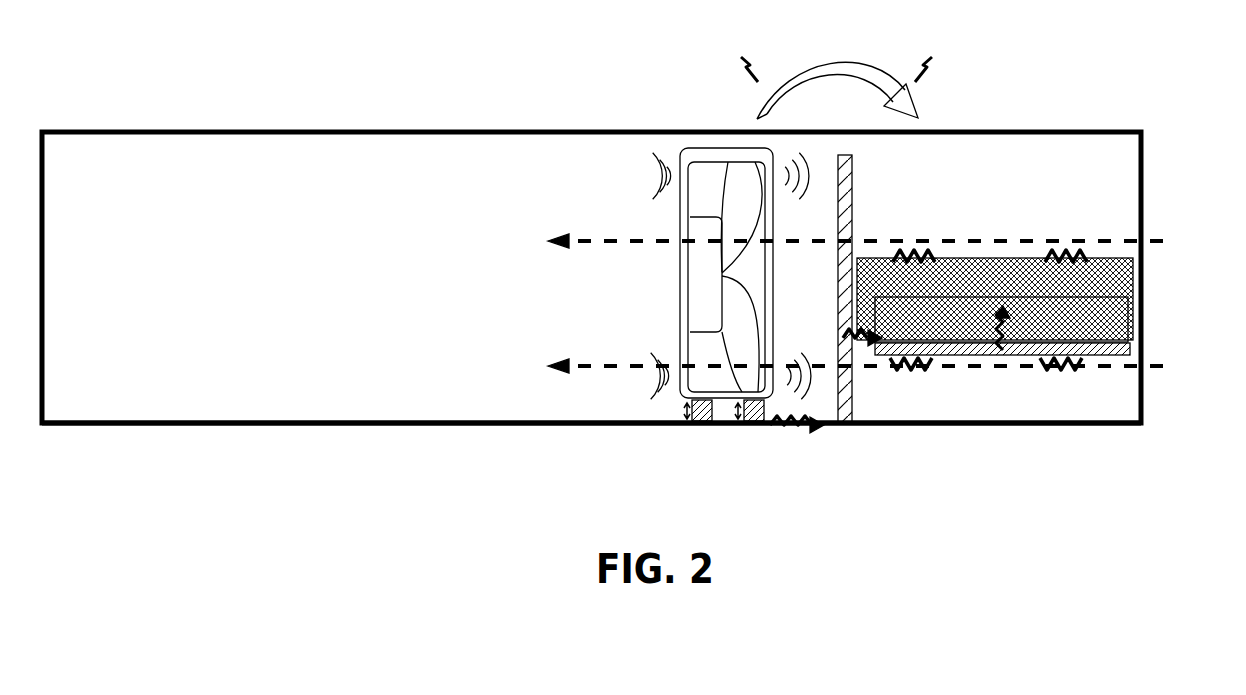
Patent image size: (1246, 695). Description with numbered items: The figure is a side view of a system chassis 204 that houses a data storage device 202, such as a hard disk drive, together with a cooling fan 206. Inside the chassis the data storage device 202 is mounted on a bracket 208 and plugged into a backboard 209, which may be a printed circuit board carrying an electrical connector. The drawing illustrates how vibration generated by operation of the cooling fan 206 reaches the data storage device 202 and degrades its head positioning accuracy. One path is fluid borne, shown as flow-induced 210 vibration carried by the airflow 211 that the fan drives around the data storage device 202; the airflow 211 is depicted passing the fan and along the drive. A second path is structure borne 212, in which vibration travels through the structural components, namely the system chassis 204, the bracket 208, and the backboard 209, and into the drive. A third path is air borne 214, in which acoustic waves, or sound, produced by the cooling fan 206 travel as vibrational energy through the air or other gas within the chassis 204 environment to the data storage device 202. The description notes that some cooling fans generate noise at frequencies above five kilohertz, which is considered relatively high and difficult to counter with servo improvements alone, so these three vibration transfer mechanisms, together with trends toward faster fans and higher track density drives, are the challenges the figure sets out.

The data storage device 202 is at (1145, 280).
The system chassis 204 is at (223, 150).
The cooling fan 206 is at (702, 281).
The bracket 208 is at (1144, 406).
The backboard 209 is at (846, 200).
The flow-induced vibration 210 is at (1083, 460).
The airflow 211 is at (588, 360).
The structure borne vibration 212 is at (838, 426).
The air borne vibration 214 is at (863, 46).